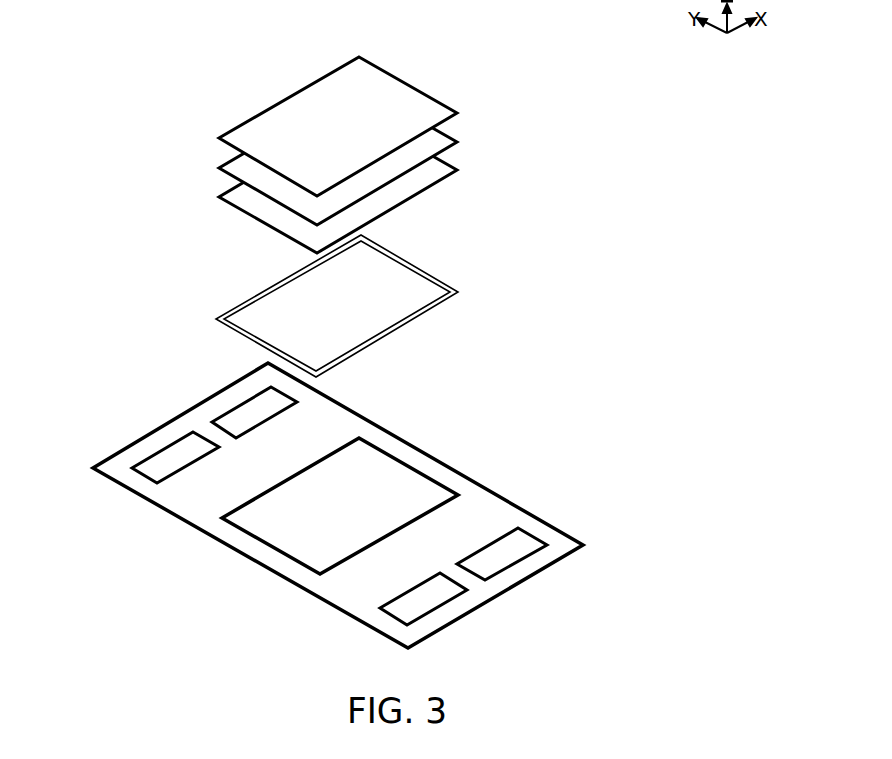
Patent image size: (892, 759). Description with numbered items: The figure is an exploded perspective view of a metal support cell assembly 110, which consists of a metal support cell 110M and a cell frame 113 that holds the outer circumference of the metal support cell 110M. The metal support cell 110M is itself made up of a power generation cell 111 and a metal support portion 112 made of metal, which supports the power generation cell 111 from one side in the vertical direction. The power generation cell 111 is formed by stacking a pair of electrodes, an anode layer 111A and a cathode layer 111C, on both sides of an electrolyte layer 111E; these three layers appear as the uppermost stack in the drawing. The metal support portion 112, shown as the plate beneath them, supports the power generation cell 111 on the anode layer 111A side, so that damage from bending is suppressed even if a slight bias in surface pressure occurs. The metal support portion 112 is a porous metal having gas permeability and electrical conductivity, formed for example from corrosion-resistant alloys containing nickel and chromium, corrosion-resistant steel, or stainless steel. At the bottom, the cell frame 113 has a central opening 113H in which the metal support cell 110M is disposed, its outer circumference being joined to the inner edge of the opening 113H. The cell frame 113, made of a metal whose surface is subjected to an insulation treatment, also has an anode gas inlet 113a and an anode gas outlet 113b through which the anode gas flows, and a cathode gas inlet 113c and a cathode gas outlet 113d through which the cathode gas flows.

The metal support cell assembly 110 is at (698, 40).
The metal support cell 110M is at (618, 38).
The power generation cell 111 is at (418, 155).
The cathode layer 111C is at (457, 113).
The electrolyte layer 111E is at (457, 142).
The anode layer 111A is at (457, 170).
The metal support portion 112 is at (458, 292).
The cell frame 113 is at (341, 505).
The anode gas inlet 113a is at (567, 552).
The anode gas outlet 113b is at (133, 462).
The cathode gas inlet 113c is at (465, 592).
The cathode gas outlet 113d is at (208, 422).
The opening 113H is at (252, 538).